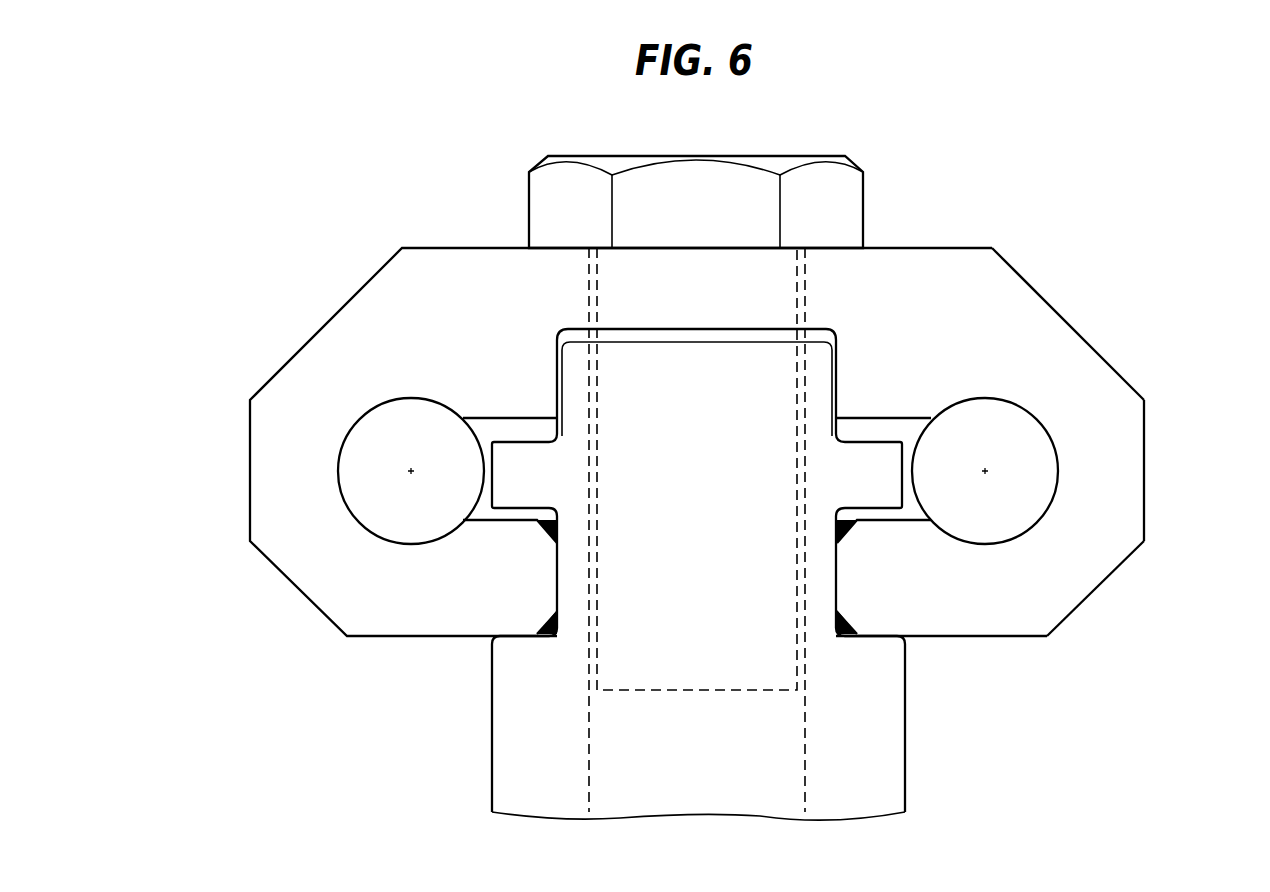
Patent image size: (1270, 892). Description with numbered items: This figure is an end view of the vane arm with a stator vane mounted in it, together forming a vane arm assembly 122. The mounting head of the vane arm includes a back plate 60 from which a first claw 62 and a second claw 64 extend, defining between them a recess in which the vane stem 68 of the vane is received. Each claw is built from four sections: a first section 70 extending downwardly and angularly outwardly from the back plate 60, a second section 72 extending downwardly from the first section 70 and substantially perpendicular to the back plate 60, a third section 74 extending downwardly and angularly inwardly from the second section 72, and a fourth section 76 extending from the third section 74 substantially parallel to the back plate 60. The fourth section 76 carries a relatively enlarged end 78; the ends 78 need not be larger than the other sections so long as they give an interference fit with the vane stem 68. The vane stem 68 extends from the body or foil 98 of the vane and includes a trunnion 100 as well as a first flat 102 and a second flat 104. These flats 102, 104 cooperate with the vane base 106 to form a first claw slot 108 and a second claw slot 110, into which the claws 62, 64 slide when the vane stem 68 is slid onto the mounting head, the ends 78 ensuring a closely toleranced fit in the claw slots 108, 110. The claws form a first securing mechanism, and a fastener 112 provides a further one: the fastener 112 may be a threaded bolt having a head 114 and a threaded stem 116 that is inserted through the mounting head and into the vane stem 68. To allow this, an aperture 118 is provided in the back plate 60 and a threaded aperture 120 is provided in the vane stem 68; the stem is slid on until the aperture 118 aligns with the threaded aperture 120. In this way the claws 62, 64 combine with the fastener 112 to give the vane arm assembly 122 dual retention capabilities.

The back plate 60 is at (848, 277).
The first claw 62 is at (222, 485).
The second claw 64 is at (1160, 509).
The vane stem 68 is at (686, 430).
The first section 70 is at (1069, 337).
The second section 72 is at (1127, 446).
The third section 74 is at (1085, 575).
The fourth section 76 is at (1002, 614).
The enlarged end 78 is at (853, 609).
The foil 98 is at (890, 784).
The trunnion 100 is at (818, 362).
The first flat 102 is at (502, 482).
The second flat 104 is at (890, 482).
The vane base 106 is at (577, 575).
The first claw slot 108 is at (563, 525).
The second claw slot 110 is at (840, 523).
The fastener 112 is at (749, 150).
The head 114 is at (864, 188).
The threaded stem 116 is at (700, 690).
The aperture 118 is at (588, 290).
The threaded aperture 120 is at (590, 752).
The vane arm assembly 122 is at (1085, 257).